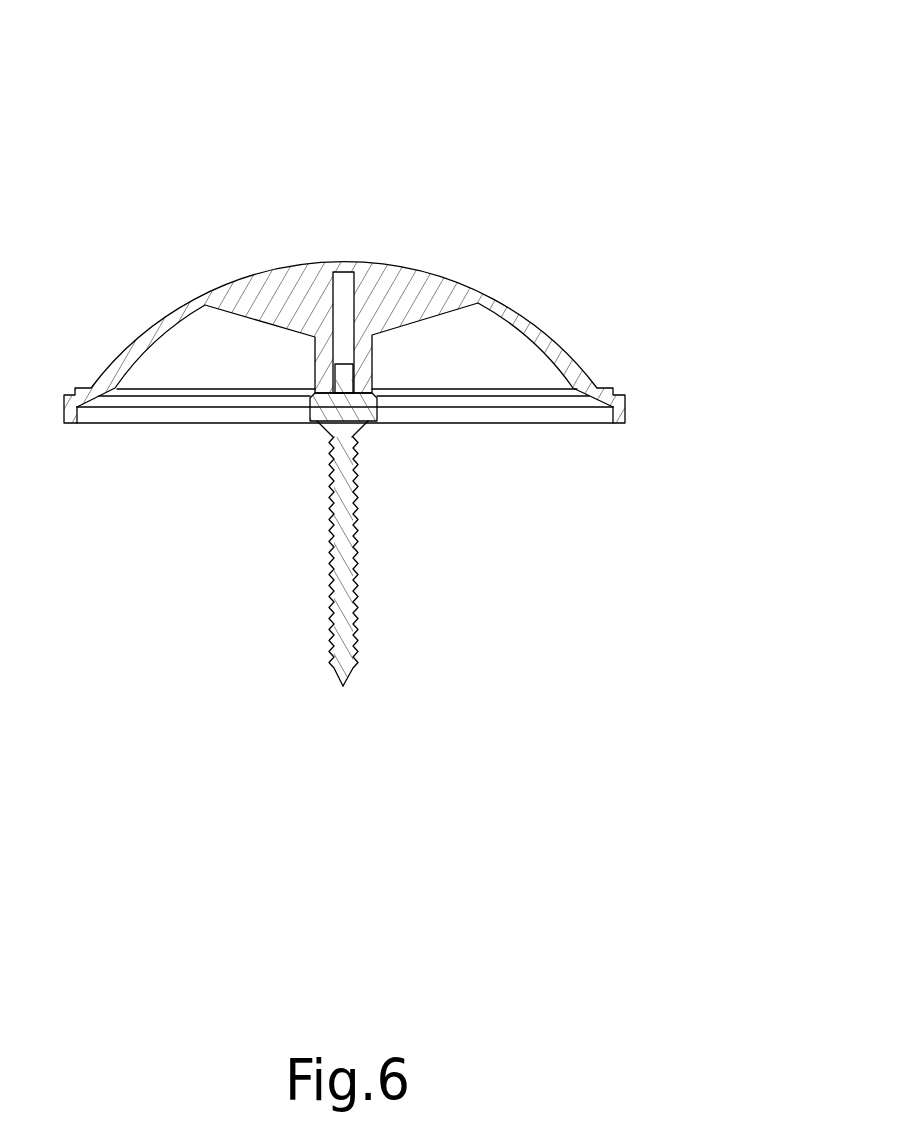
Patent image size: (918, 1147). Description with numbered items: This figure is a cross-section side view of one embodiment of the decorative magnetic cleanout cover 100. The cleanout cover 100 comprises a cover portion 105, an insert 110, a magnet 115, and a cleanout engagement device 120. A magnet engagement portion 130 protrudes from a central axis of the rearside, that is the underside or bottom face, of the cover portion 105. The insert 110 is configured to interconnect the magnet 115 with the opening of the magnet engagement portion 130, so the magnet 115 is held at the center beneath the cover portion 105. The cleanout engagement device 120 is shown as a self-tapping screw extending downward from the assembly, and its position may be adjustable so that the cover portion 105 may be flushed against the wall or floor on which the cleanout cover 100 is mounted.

The decorative magnetic cleanout cover 100 is at (548, 72).
The cover portion 105 is at (482, 290).
The insert 110 is at (337, 393).
The magnet 115 is at (355, 397).
The cleanout engagement device 120 is at (330, 573).
The magnet engagement portion 130 is at (333, 273).